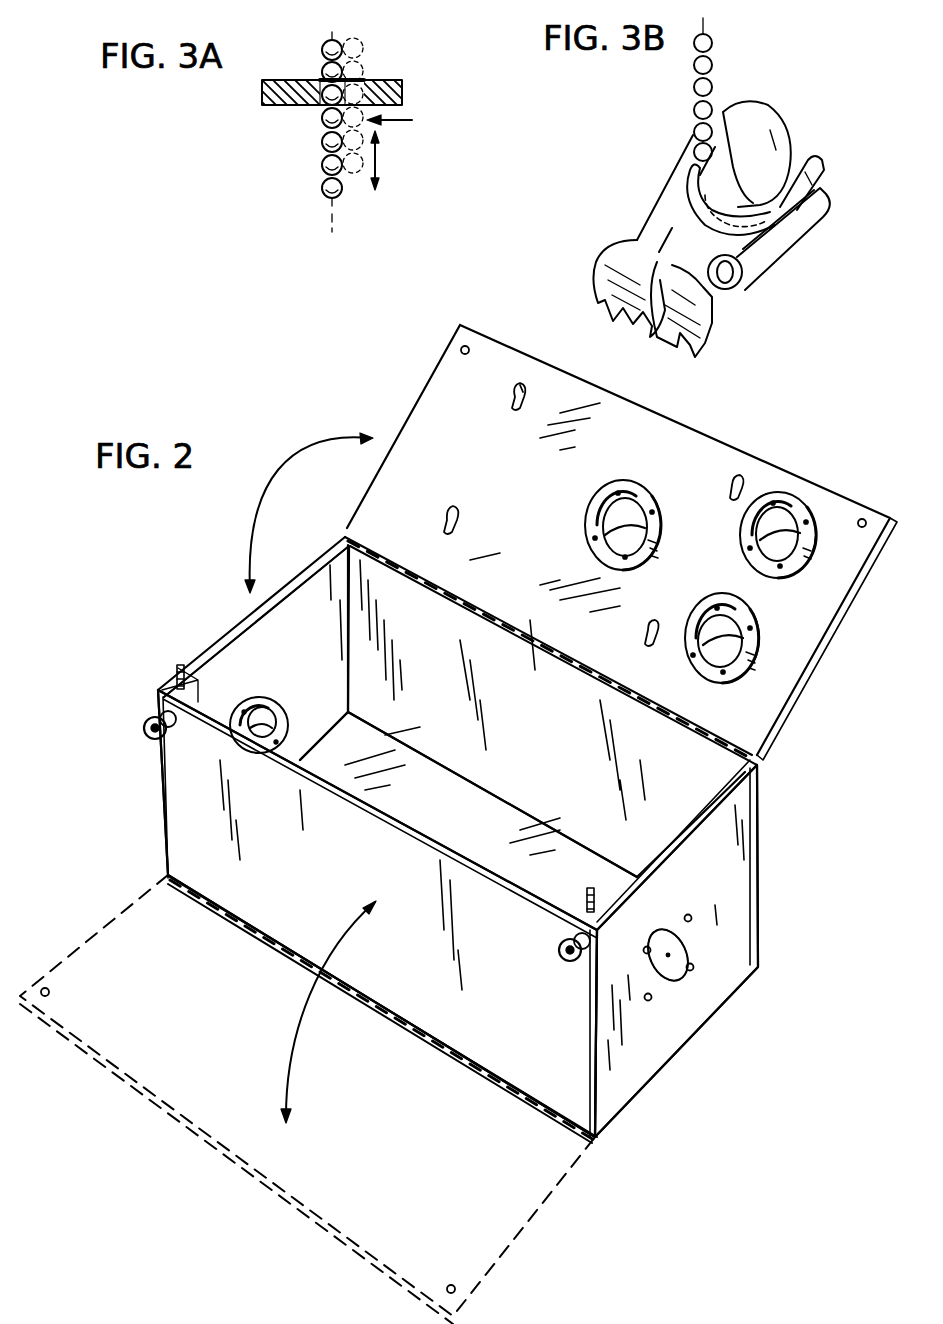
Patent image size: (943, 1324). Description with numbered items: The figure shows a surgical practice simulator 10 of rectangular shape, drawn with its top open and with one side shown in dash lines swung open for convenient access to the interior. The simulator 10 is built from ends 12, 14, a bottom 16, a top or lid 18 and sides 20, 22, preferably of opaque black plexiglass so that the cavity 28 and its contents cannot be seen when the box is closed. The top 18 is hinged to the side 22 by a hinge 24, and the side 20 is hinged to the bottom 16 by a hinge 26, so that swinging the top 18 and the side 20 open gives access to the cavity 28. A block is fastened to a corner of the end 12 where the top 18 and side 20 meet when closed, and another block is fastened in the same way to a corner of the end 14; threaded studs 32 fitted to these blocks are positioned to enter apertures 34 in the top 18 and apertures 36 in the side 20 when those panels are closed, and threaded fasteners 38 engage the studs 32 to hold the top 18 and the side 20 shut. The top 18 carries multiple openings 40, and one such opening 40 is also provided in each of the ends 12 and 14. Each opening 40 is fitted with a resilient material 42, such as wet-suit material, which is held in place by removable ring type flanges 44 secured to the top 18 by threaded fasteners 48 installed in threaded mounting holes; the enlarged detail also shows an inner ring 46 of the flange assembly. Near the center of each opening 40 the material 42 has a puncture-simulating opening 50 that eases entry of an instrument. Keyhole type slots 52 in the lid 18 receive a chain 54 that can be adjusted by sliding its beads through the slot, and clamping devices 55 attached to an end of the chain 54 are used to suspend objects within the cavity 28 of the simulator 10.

In FIG. 2, the simulator 10 is at (197, 562).
In FIG. 2, the end 12 is at (727, 869).
In FIG. 2, the end 14 is at (294, 652).
In FIG. 2, the bottom 16 is at (467, 824).
In FIG. 3A, the top (lid) 18 is at (275, 80).
In FIG. 2, the top (lid) 18 is at (507, 452).
In FIG. 2, the side 20 is at (424, 950).
In FIG. 2, the side 22 is at (549, 744).
In FIG. 2, the hinge 24 is at (480, 612).
In FIG. 2, the hinge 26 is at (460, 1070).
In FIG. 2, the cavity 28 is at (318, 588).
In FIG. 2, the threaded studs 32 is at (180, 665).
In FIG. 2, the apertures 34 is at (460, 350).
In FIG. 2, the apertures 36 is at (43, 987).
In FIG. 2, the threaded fasteners 38 is at (144, 727).
In FIG. 2, the openings 40 is at (672, 980).
In FIG. 2, the resilient material 42 is at (616, 540).
In FIG. 2, the ring type flanges 44 is at (597, 518).
In FIG. 2, the ring 46 is at (612, 492).
In FIG. 2, the threaded fasteners 48 is at (617, 492).
In FIG. 2, the puncture-simulating opening 50 is at (605, 535).
In FIG. 3A, the keyhole type slots 52 is at (355, 78).
In FIG. 2, the keyhole type slots 52 is at (512, 392).
In FIG. 3A, the chain 54 is at (322, 141).
In FIG. 3B, the chain 54 is at (715, 66).
In FIG. 3B, the clamping devices 55 is at (660, 228).